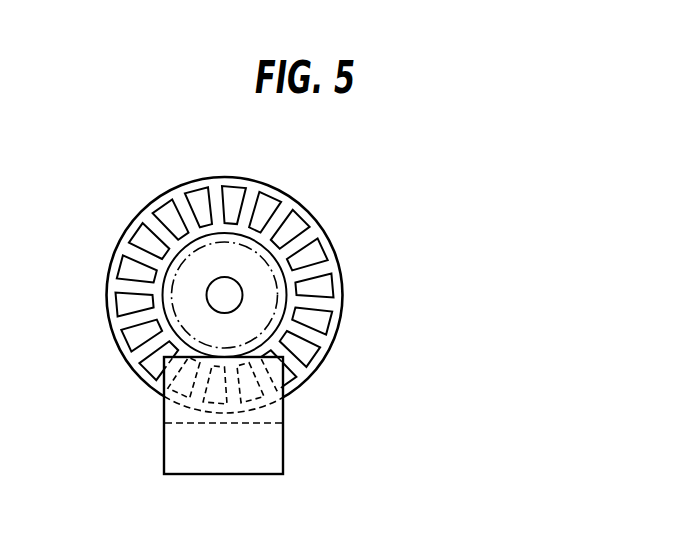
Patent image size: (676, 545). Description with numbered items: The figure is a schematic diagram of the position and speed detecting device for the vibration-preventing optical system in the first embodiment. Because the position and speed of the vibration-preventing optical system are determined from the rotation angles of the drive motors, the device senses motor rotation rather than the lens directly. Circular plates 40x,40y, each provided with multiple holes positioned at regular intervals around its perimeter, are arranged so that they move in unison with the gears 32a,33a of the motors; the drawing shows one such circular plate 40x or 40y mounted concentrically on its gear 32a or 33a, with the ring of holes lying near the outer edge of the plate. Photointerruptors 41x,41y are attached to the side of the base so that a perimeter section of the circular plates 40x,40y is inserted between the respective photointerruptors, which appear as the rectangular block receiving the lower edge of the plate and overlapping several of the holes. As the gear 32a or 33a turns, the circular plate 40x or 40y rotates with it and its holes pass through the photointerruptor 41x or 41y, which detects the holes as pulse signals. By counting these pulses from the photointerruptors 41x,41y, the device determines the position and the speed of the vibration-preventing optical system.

The circular plates 40x,40y is at (235, 272).
The circular plate 40x is at (235, 272).
The circular plate 40y is at (250, 193).
The gears 32a,33a is at (308, 295).
The gear 32a is at (308, 295).
The gear 33a is at (253, 288).
The photointerruptors 41x,41y is at (287, 415).
The photointerruptor 41x is at (287, 415).
The photointerruptor 41y is at (283, 412).